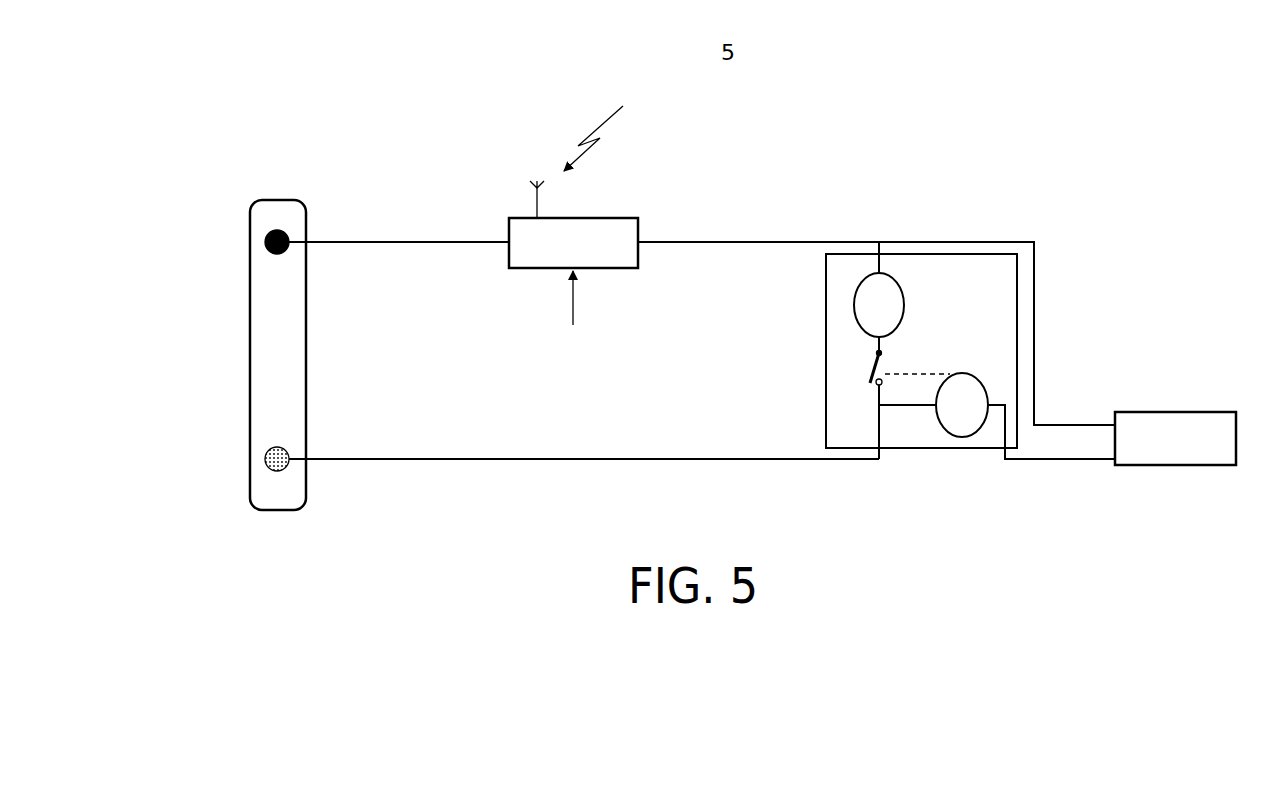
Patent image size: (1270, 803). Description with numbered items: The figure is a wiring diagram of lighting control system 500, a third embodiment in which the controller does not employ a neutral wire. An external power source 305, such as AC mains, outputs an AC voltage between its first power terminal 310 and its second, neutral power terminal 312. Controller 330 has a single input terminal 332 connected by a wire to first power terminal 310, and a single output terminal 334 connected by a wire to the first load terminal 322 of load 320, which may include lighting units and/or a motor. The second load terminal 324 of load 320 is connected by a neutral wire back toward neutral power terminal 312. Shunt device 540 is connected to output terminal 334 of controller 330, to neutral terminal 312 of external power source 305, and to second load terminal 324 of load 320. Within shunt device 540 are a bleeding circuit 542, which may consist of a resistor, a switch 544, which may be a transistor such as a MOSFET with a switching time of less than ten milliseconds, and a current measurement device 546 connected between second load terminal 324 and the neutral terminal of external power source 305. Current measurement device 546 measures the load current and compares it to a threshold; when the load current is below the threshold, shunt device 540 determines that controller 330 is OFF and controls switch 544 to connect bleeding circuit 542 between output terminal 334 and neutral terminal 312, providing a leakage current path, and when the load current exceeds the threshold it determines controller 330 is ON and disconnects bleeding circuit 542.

The lighting control system 500 is at (1179, 110).
The external power source 305 is at (252, 388).
The first power terminal 310 is at (349, 230).
The second power terminal 312 is at (584, 447).
The load 320 is at (1197, 411).
The first load terminal 322 is at (997, 333).
The second load terminal 324 is at (1051, 447).
The controller 330 is at (523, 262).
The input terminal 332 is at (459, 230).
The output terminal 334 is at (758, 230).
The shunt device 540 is at (888, 350).
The bleeding circuit 542 is at (888, 283).
The switch 544 is at (872, 366).
The current measurement device 546 is at (976, 386).